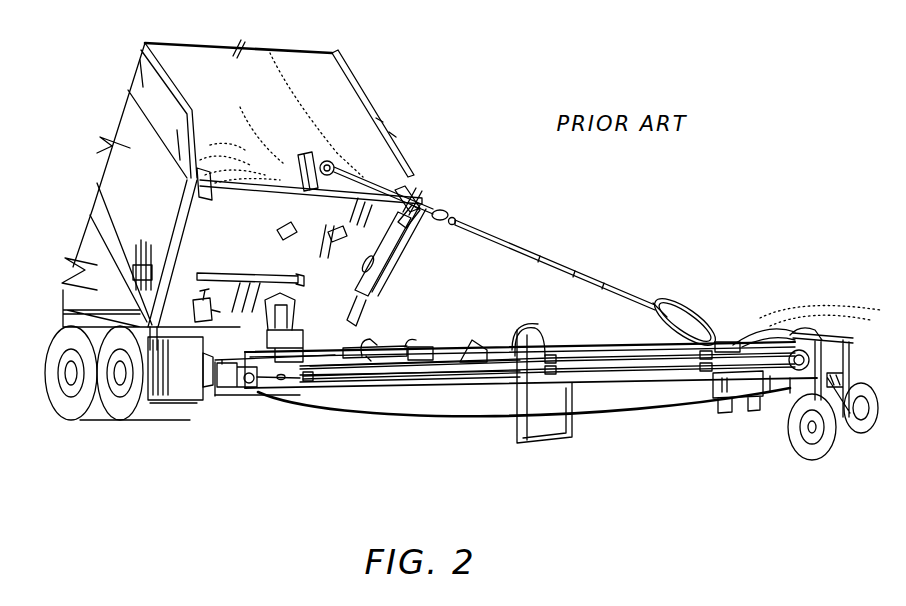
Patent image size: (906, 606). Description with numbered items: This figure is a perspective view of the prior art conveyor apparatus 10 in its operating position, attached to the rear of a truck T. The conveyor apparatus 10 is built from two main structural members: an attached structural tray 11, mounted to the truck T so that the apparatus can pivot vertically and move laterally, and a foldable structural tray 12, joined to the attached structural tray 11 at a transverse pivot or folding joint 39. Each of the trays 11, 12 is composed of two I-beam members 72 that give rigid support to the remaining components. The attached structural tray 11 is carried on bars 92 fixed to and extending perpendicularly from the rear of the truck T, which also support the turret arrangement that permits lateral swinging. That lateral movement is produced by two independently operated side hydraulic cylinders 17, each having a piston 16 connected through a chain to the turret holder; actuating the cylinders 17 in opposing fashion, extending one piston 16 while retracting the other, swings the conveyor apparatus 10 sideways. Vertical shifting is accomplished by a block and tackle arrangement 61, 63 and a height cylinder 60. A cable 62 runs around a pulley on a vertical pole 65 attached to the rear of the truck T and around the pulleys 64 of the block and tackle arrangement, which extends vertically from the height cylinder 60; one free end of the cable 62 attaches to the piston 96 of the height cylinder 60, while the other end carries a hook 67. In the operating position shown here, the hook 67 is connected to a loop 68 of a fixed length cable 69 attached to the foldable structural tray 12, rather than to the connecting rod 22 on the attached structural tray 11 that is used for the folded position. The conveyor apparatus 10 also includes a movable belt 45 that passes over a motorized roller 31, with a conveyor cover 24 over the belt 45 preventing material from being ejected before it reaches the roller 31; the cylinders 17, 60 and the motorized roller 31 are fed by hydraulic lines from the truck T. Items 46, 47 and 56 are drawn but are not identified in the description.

The truck T is at (362, 88).
The conveyor apparatus 10 is at (630, 243).
The attached structural tray 11 is at (420, 382).
The foldable structural tray 12 is at (666, 386).
The piston 16 is at (320, 410).
The side hydraulic cylinder 17 is at (377, 375).
The connecting rod 22 is at (480, 345).
The conveyor cover 24 is at (662, 350).
The motorized roller 31 is at (792, 405).
The transverse pivot or folding joint 39 is at (525, 336).
The movable belt 45 is at (605, 423).
The clip 46 is at (372, 342).
The bracket 47 is at (416, 341).
The hitch pin 56 is at (237, 405).
The height cylinder 60 is at (325, 330).
The block and tackle arrangement 61 is at (372, 283).
The cable 62 is at (395, 258).
The block and tackle arrangement 63 is at (408, 228).
The pulleys 64 is at (415, 192).
The vertical pole 65 is at (277, 167).
The hook 67 is at (460, 210).
The loop 68 is at (476, 222).
The fixed length cable 69 is at (555, 258).
The I-beam members 72 is at (482, 380).
The bars 92 is at (228, 330).
The piston 96 is at (350, 277).